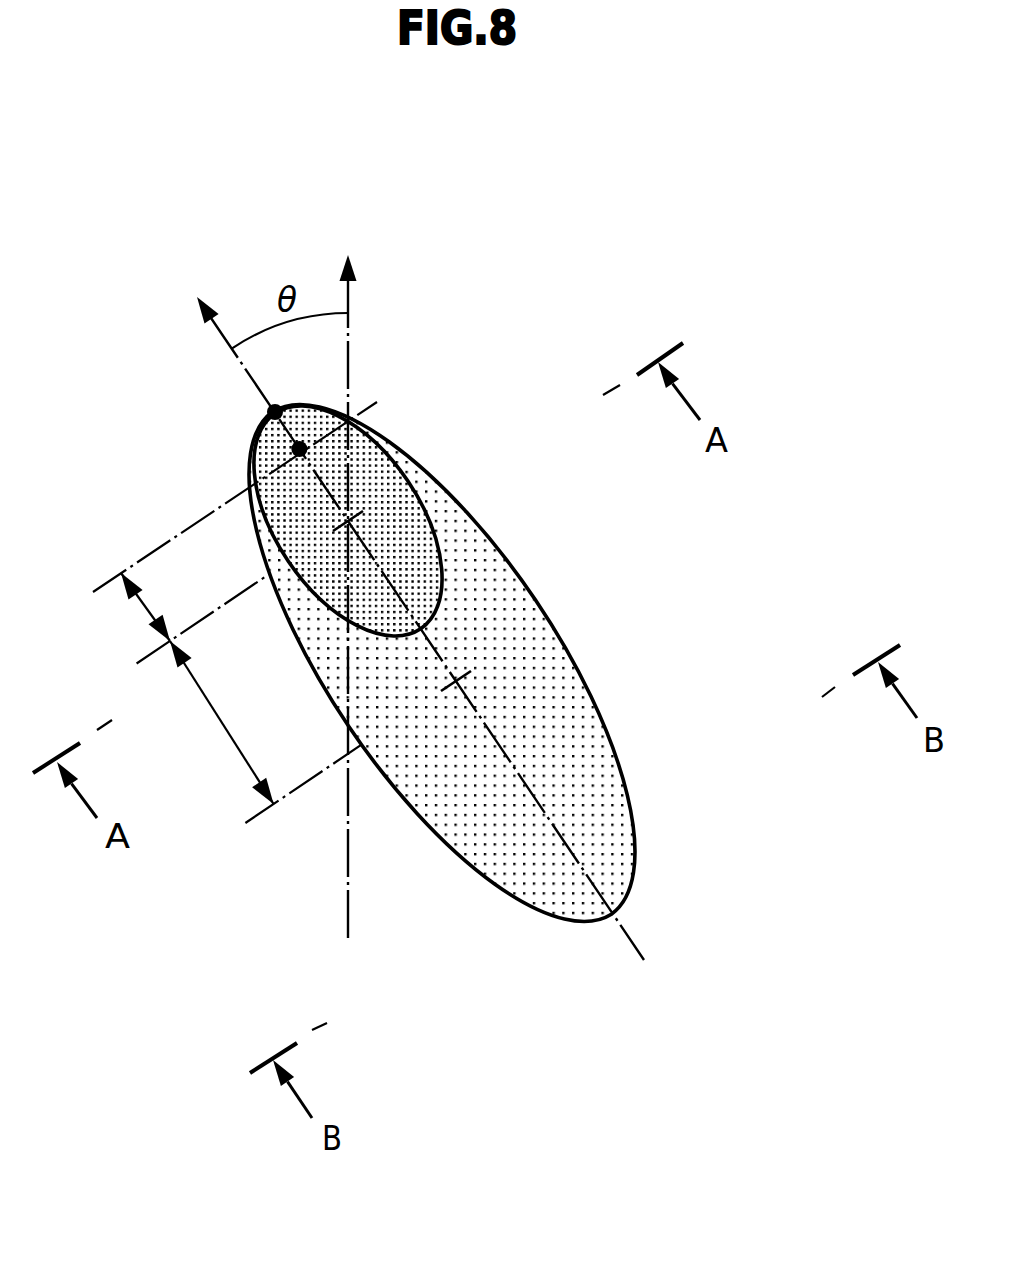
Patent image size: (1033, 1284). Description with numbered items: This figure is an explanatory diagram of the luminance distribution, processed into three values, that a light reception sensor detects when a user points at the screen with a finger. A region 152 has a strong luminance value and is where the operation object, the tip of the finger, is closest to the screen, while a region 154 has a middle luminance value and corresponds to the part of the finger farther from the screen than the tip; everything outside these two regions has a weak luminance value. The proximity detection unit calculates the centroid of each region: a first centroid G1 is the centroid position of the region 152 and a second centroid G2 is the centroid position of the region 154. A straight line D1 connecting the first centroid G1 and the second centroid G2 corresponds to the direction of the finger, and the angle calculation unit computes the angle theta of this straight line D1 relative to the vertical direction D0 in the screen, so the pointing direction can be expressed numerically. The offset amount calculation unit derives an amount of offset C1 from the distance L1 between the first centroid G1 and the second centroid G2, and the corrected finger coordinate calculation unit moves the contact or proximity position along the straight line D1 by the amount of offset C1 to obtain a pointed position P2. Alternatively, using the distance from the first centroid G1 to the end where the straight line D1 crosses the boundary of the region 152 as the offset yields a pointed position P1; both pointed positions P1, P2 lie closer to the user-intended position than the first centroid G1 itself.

The region 152 is at (382, 467).
The region 154 is at (541, 875).
The first centroid G1 is at (365, 521).
The second centroid G2 is at (472, 683).
The pointed position P1 is at (270, 412).
The pointed position P2 is at (292, 450).
The vertical direction D0 is at (357, 570).
The straight line D1 is at (402, 605).
The amount of offset C1 is at (136, 609).
The distance L1 is at (222, 722).